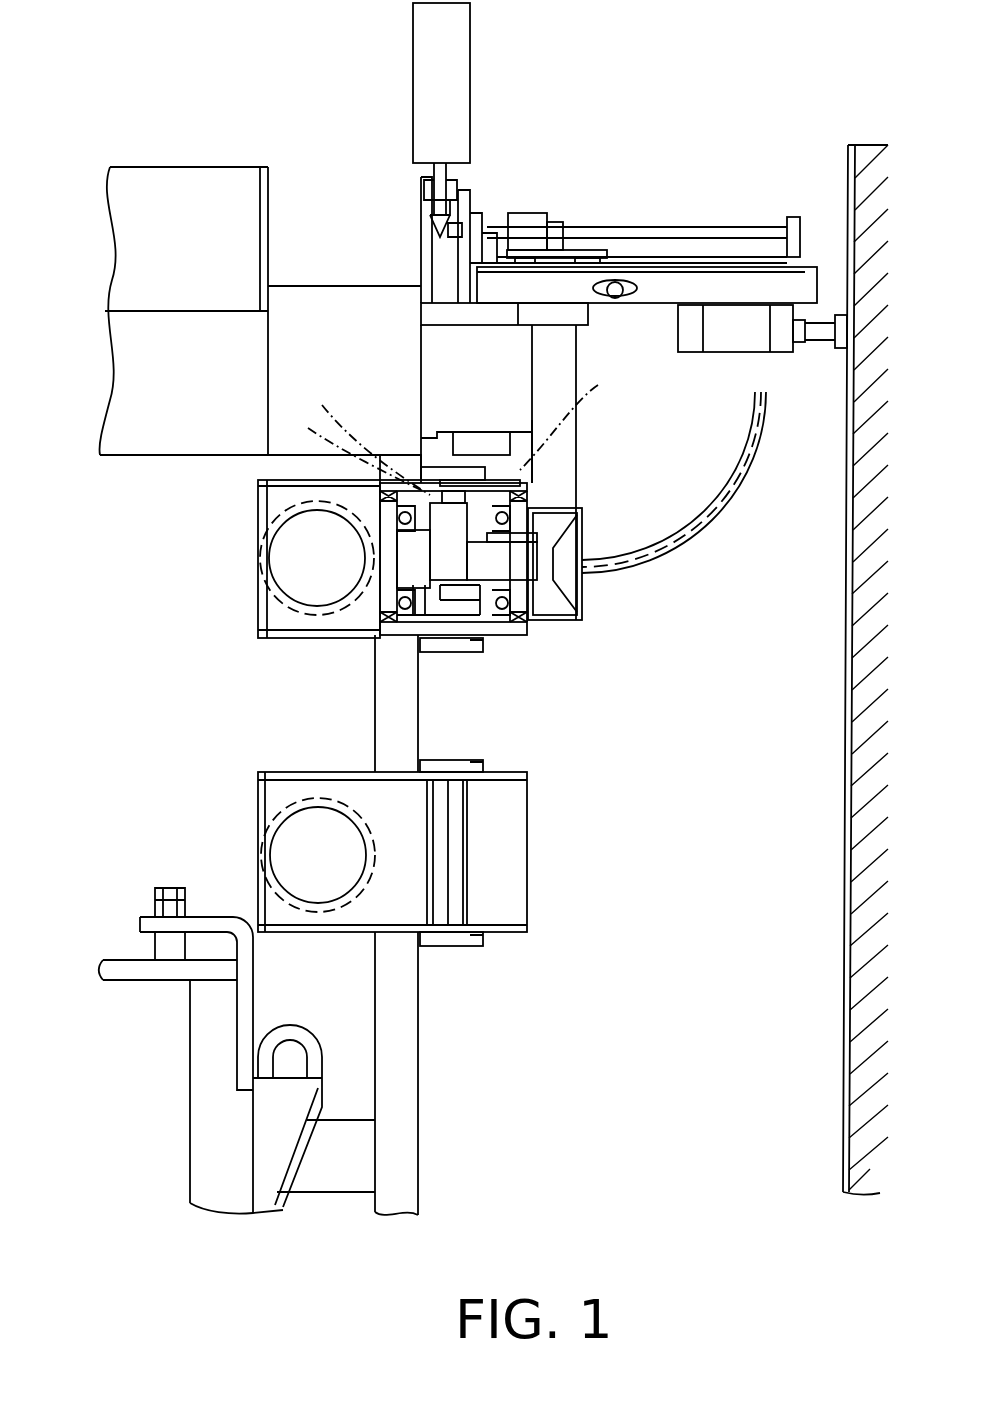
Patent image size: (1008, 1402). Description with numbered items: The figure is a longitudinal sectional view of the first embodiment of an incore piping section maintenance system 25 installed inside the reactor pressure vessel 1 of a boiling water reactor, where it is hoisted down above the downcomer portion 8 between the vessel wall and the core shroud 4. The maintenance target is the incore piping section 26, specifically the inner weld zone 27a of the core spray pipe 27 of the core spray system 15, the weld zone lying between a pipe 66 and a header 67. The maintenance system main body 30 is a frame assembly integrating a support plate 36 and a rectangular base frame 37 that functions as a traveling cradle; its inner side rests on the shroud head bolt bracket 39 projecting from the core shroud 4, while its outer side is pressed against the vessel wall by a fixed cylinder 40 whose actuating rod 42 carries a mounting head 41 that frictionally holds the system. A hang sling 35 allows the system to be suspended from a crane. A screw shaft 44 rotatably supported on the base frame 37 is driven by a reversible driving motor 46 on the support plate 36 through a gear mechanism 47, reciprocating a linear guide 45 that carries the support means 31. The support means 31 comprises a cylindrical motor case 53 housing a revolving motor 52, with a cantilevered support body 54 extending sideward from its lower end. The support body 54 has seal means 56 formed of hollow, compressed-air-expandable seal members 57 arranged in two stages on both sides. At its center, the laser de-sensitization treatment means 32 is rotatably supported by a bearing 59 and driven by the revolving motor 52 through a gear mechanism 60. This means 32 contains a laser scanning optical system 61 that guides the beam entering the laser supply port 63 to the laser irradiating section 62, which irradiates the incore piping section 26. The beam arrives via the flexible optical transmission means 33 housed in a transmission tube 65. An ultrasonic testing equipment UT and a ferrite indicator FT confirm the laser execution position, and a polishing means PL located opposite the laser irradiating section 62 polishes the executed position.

The reactor pressure vessel 1 is at (845, 782).
The core shroud 4 is at (420, 1100).
The downcomer portion 8 is at (608, 1159).
The core spray system 15 is at (258, 808).
The incore piping section maintenance system 25 is at (588, 222).
The incore piping section 26 is at (513, 638).
The core spray pipe 27 is at (485, 728).
The inner weld zone 27a is at (447, 843).
The maintenance system main body 30 is at (722, 258).
The support means 31 is at (594, 598).
The laser de-sensitization treatment means 32 is at (452, 530).
The optical transmission means 33 is at (748, 476).
The hang sling 35 is at (615, 282).
The support plate 36 is at (430, 310).
The base frame 37 is at (797, 283).
The shroud head bolt bracket 39 is at (443, 348).
The fixed cylinder 40 is at (713, 353).
The mounting head 41 is at (840, 350).
The actuating rod 42 is at (817, 333).
The screw shaft 44 is at (675, 228).
The linear guide 45 is at (568, 250).
The driving motor 46 is at (470, 63).
The gear mechanism 47 is at (423, 232).
The revolving motor 52 is at (545, 412).
The motor case 53 is at (578, 345).
The support body 54 is at (395, 512).
The seal means 56 is at (366, 628).
The seal member 57 is at (385, 481).
The bearing 59 is at (403, 525).
The gear mechanism 60 is at (582, 545).
The laser scanning optical system 61 is at (440, 565).
The laser irradiating section 62 is at (412, 480).
The laser supply port 63 is at (573, 575).
The transmission tube 65 is at (725, 513).
The pipe 66 is at (490, 640).
The header 67 is at (307, 638).
The ferrite indicator FT is at (369, 437).
The ultrasonic testing equipment UT is at (351, 448).
The polishing means PL is at (577, 420).